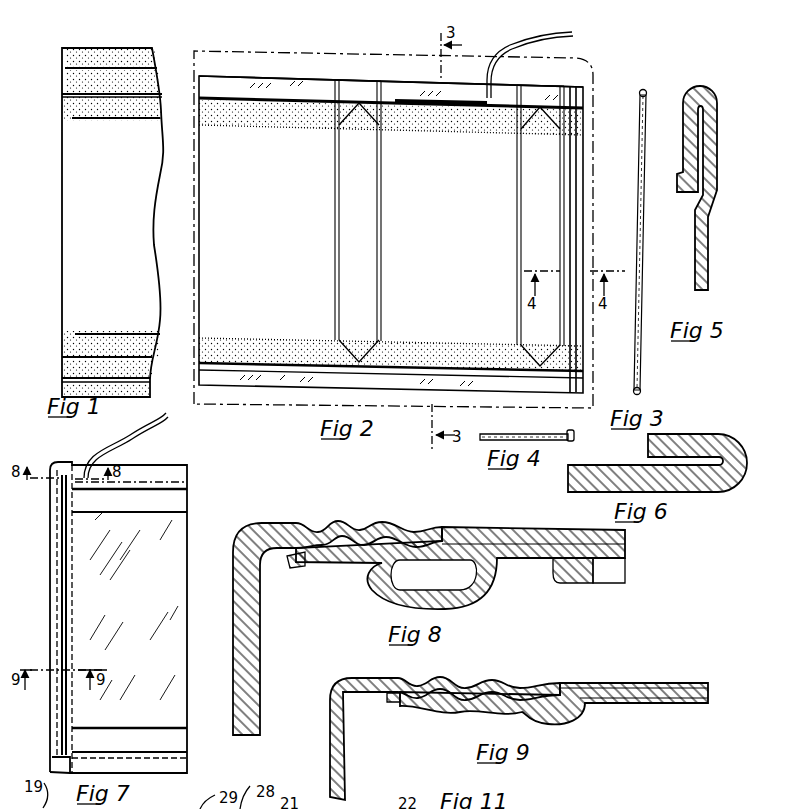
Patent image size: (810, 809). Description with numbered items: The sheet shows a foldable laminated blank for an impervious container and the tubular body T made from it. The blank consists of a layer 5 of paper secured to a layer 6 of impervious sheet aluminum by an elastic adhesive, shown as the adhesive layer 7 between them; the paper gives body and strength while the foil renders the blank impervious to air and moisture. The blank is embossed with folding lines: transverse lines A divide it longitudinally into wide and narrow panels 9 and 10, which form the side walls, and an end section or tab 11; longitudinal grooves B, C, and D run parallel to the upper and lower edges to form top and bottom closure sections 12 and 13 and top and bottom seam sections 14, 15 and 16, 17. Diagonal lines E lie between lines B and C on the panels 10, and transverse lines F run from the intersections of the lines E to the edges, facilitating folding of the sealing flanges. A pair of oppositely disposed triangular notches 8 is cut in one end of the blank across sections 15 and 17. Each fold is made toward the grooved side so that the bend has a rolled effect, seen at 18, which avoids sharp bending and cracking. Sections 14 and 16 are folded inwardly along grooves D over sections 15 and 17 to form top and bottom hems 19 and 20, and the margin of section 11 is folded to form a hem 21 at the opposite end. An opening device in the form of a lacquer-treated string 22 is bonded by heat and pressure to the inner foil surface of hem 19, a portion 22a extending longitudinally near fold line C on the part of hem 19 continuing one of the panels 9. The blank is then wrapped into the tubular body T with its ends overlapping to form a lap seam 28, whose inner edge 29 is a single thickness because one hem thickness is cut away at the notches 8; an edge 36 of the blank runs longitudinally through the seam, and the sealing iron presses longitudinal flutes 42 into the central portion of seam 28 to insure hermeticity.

In FIG. 1, the layer of paper 5 is at (78, 160).
In FIG. 2, the layer of paper 5 is at (235, 348).
In FIG. 5, the layer of paper 5 is at (697, 278).
In FIG. 7, the layer of paper 5 is at (118, 617).
In FIG. 8, the layer of paper 5 is at (532, 530).
In FIG. 9, the layer of paper 5 is at (668, 702).
In FIG. 2, the layer of impervious material 6 is at (310, 382).
In FIG. 5, the layer of impervious material 6 is at (713, 252).
In FIG. 8, the layer of impervious material 6 is at (627, 551).
In FIG. 9, the layer of impervious material 6 is at (653, 683).
In FIG. 1, the adhesive layer 7 is at (70, 112).
In FIG. 2, the adhesive layer 7 is at (198, 347).
In FIG. 1, the triangular notches 8 is at (68, 90).
In FIG. 7, the triangular notches 8 is at (67, 463).
In FIG. 1, the wide panels 9 is at (112, 236).
In FIG. 2, the wide panels 9 is at (271, 244).
In FIG. 7, the wide panels 9 is at (172, 568).
In FIG. 9, the wide panels 9 is at (632, 697).
In FIG. 2, the narrow panels 10 is at (364, 240).
In FIG. 8, the narrow panels 10 is at (337, 628).
In FIG. 9, the narrow panels 10 is at (345, 768).
In FIG. 2, the end section or tab 11 is at (572, 188).
In FIG. 2, the top closure section 12 is at (270, 113).
In FIG. 2, the bottom closure section 13 is at (391, 354).
In FIG. 1, the top seam section 14 is at (87, 58).
In FIG. 1, the top seam section 15 is at (117, 78).
In FIG. 1, the bottom seam section 16 is at (120, 387).
In FIG. 1, the bottom seam section 17 is at (72, 366).
In FIG. 5, the rolled bend 18 is at (712, 94).
In FIG. 6, the rolled bend 18 is at (727, 437).
In FIG. 2, the top sealing flange or hem 19 is at (307, 90).
In FIG. 3, the top sealing flange or hem 19 is at (650, 105).
In FIG. 5, the top sealing flange or hem 19 is at (718, 152).
In FIG. 2, the bottom sealing flange or hem 20 is at (263, 380).
In FIG. 3, the bottom sealing flange or hem 20 is at (645, 388).
In FIG. 2, the hem 21 is at (583, 218).
In FIG. 4, the hem 21 is at (572, 440).
In FIG. 6, the hem 21 is at (703, 460).
In FIG. 2, the string 22 is at (557, 35).
In FIG. 7, the string 22 is at (137, 435).
In FIG. 8, the string 22 is at (573, 578).
In FIG. 2, the portion of string 22a is at (445, 107).
In FIG. 5, the portion of string 22a is at (682, 180).
In FIG. 7, the portion of string 22a is at (190, 478).
In FIG. 7, the lap seam 28 is at (60, 624).
In FIG. 8, the lap seam 28 is at (445, 522).
In FIG. 9, the lap seam 28 is at (543, 681).
In FIG. 2, the inner edge 29 is at (192, 218).
In FIG. 8, the inner edge 29 is at (290, 568).
In FIG. 9, the inner edge 29 is at (387, 702).
In FIG. 8, the edge of blank 36 is at (372, 570).
In FIG. 9, the edge of blank 36 is at (472, 707).
In FIG. 7, the longitudinal flutes 42 is at (70, 552).
In FIG. 8, the longitudinal flutes 42 is at (355, 527).
In FIG. 9, the longitudinal flutes 42 is at (463, 682).
In FIG. 2, the transverse lines A is at (388, 199).
In FIG. 1, the longitudinal line or groove B is at (88, 118).
In FIG. 7, the longitudinal line or groove B is at (178, 493).
In FIG. 1, the longitudinal line or groove C is at (82, 93).
In FIG. 7, the longitudinal line or groove C is at (175, 517).
In FIG. 1, the longitudinal line or groove D is at (77, 63).
In FIG. 7, the longitudinal line or groove D is at (167, 773).
In FIG. 2, the diagonal lines E is at (372, 121).
In FIG. 2, the transverse lines F is at (366, 90).
In FIG. 7, the tubular body T is at (173, 650).